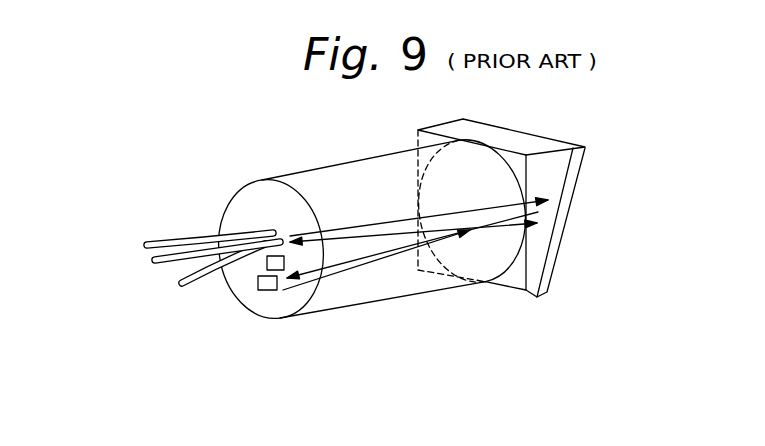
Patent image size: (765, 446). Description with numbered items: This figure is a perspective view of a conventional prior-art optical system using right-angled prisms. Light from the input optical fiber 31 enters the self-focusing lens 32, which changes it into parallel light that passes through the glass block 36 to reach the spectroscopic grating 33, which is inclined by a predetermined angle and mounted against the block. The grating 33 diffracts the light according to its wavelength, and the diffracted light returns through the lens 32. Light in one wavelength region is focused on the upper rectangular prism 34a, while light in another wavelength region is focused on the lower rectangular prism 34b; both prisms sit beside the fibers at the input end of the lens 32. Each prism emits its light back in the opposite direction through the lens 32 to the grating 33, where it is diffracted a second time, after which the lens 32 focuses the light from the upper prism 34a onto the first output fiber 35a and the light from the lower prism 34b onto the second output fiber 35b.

The input optical fiber 31 is at (155, 261).
The self-focusing lens 32 is at (318, 172).
The spectroscopic grating 33 is at (580, 158).
The upper rectangular prism 34a is at (266, 261).
The lower rectangular prism 34b is at (268, 290).
The first output fiber 35a is at (145, 243).
The second output fiber 35b is at (182, 284).
The glass block 36 is at (522, 138).